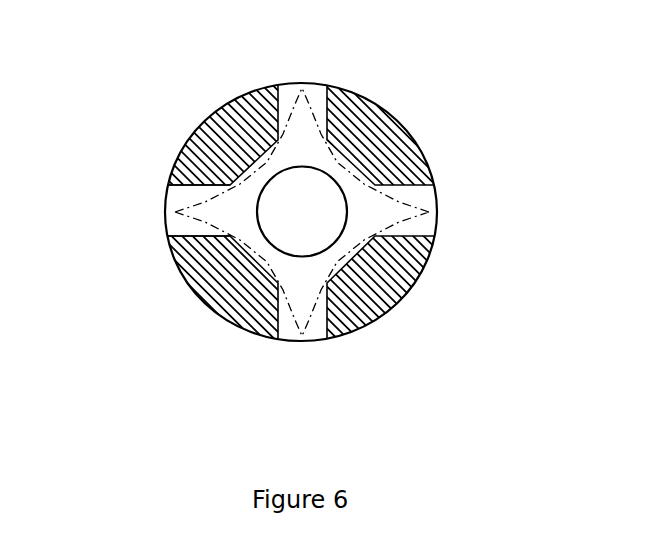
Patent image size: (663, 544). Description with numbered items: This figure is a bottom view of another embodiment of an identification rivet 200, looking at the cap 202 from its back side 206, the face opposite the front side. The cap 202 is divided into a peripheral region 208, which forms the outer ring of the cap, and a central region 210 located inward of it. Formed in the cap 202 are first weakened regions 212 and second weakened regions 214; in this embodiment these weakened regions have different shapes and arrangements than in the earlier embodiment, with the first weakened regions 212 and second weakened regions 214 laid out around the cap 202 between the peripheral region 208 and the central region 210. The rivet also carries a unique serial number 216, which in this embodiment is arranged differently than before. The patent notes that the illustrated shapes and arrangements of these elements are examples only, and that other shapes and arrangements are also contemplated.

The identification rivet 200 is at (95, 61).
The cap 202 is at (393, 114).
The back side 206 is at (436, 186).
The peripheral region 208 is at (197, 128).
The central region 210 is at (272, 340).
The first weakened regions 212 is at (303, 119).
The second weakened regions 214 is at (309, 118).
The unique serial number 216 is at (170, 163).